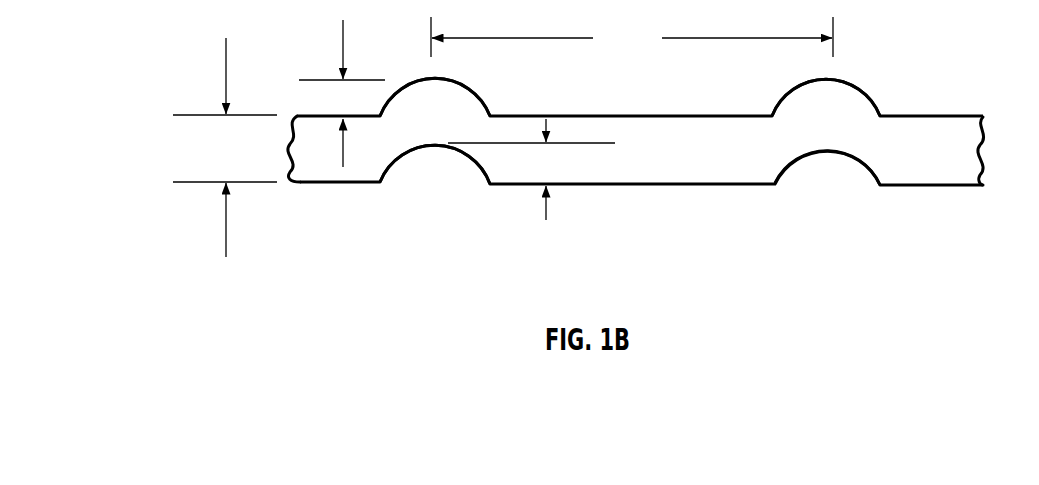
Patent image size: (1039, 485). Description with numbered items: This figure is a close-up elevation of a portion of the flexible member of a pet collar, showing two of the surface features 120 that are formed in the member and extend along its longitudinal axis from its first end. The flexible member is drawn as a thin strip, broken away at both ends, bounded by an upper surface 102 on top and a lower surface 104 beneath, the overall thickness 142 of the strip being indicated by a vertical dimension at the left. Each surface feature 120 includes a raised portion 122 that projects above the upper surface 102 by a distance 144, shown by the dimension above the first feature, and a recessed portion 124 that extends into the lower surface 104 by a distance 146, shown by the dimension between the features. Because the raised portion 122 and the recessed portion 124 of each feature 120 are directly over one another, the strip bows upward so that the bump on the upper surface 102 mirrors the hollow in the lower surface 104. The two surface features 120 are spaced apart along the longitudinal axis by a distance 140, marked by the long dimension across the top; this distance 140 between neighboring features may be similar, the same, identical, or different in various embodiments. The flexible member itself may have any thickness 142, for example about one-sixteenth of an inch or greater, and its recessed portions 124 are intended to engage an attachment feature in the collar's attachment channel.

The upper surface 102 is at (641, 117).
The lower surface 104 is at (640, 185).
The surface feature 120 is at (655, 154).
The raised portion 122 is at (473, 92).
The recessed portion 124 is at (398, 158).
The distance 140 is at (632, 37).
The thickness 142 is at (225, 147).
The distance 144 is at (342, 93).
The distance 146 is at (531, 169).